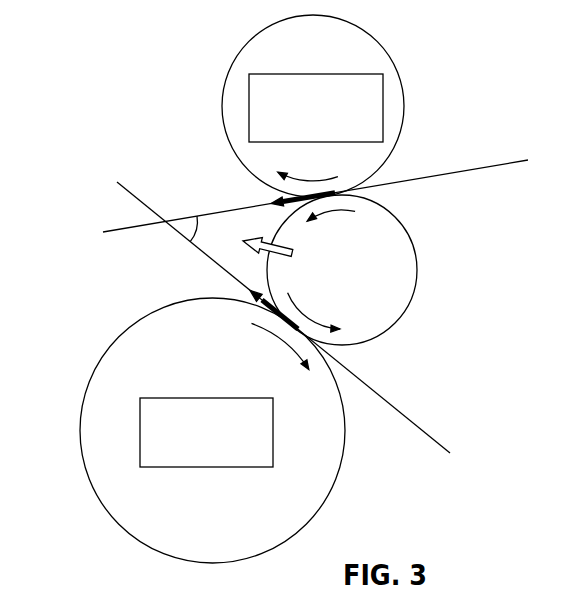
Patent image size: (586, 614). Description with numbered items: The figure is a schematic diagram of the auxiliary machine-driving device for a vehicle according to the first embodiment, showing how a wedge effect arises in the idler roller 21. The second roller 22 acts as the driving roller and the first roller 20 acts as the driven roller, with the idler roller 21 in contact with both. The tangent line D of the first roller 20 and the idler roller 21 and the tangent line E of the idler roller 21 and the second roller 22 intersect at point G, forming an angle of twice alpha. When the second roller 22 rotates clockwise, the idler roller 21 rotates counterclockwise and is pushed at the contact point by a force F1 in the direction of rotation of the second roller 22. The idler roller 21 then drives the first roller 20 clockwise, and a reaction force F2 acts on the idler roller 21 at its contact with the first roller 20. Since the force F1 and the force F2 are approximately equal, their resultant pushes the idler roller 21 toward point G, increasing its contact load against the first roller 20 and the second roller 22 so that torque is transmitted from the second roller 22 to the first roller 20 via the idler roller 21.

The first roller 20 is at (110, 347).
The idler roller 21 is at (402, 272).
The second roller 22 is at (405, 100).
The tangent line E is at (503, 165).
The tangent line D is at (430, 432).
The point G is at (165, 221).
The force F1 is at (272, 200).
The force F2 is at (248, 293).